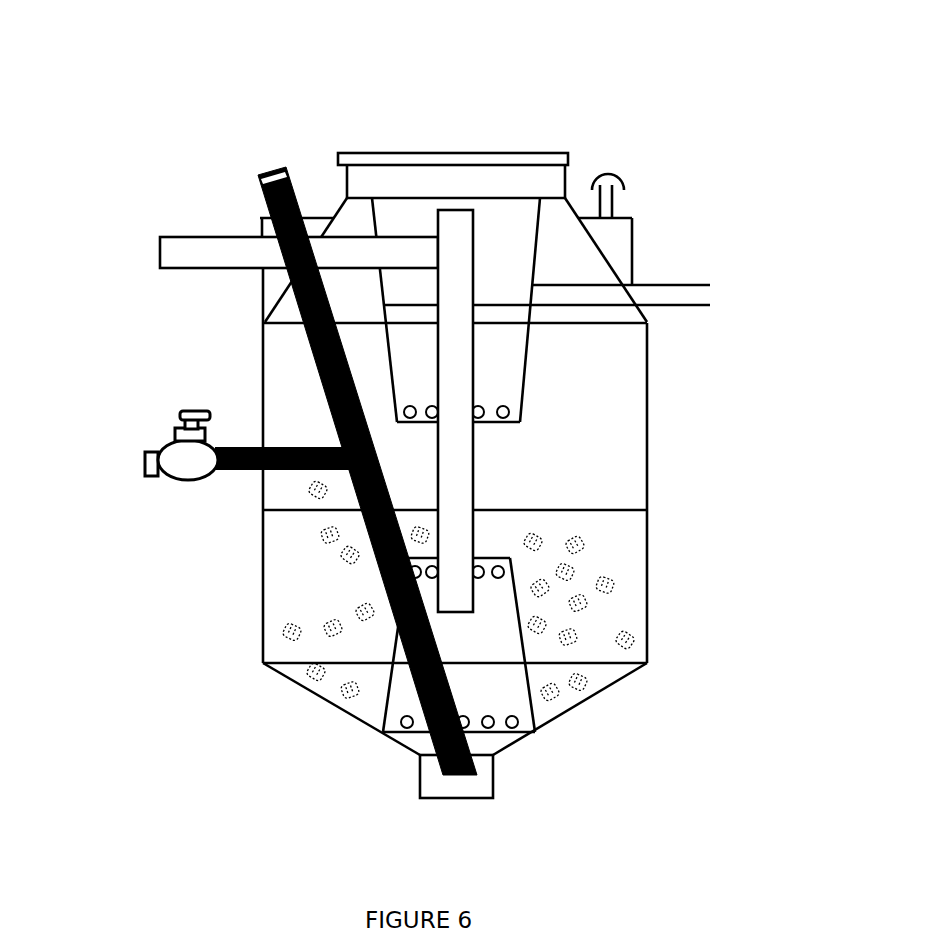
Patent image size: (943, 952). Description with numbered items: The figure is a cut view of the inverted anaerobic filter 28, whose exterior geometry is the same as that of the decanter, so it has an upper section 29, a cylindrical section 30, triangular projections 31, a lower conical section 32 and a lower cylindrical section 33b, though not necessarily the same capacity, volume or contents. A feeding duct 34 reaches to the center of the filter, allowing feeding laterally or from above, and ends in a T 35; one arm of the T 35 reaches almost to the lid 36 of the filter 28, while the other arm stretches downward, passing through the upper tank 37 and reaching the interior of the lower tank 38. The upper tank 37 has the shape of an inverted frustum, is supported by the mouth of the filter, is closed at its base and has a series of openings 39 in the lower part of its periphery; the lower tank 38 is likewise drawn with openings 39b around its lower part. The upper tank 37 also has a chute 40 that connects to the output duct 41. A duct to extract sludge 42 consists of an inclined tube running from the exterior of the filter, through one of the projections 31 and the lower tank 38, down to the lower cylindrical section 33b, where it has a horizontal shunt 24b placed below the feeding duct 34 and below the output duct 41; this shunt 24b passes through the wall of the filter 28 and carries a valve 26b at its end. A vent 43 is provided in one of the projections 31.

The inverted anaerobic filter 28 is at (651, 371).
The upper section 29 is at (578, 198).
The cylindrical section 30 is at (261, 400).
The triangular projections 31 is at (636, 245).
The lower conical section 32 is at (353, 717).
The lower cylindrical section 33b is at (419, 777).
The feeding duct 34 is at (159, 245).
The T 35 is at (421, 230).
The lid 36 is at (547, 151).
The upper tank 37 is at (531, 339).
The lower tank 38 is at (523, 634).
The openings 39 is at (511, 410).
The perforations 39b is at (506, 572).
The chute 40 is at (498, 304).
The output duct 41 is at (714, 293).
The duct to extract sludge 42 is at (315, 353).
The vent 43 is at (618, 201).
The horizontal shunt 24b is at (250, 476).
The valve 26b is at (170, 477).